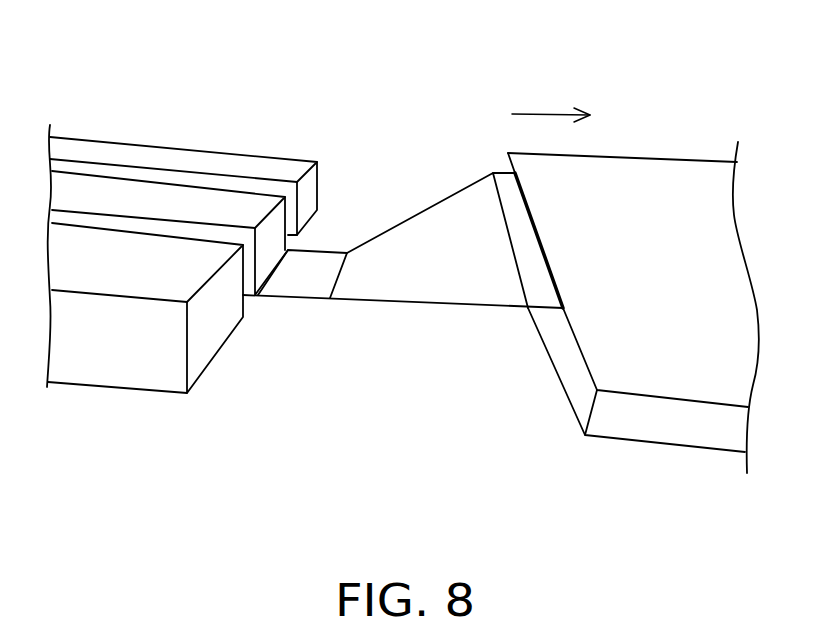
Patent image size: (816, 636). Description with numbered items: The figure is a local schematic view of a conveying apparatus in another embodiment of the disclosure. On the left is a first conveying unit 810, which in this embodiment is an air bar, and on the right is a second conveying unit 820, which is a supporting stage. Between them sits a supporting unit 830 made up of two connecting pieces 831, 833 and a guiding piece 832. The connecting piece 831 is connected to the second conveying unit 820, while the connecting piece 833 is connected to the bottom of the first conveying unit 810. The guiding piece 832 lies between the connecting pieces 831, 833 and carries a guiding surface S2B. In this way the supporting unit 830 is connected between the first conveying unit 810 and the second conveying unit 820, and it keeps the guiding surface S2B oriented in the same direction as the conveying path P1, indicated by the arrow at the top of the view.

The first conveying unit 810 is at (122, 362).
The second conveying unit 820 is at (653, 423).
The supporting unit 830 is at (480, 428).
The connecting piece 831 is at (540, 296).
The guiding piece 832 is at (402, 292).
The connecting piece 833 is at (300, 287).
The guiding surface S2B is at (447, 225).
The conveying path P1 is at (548, 113).